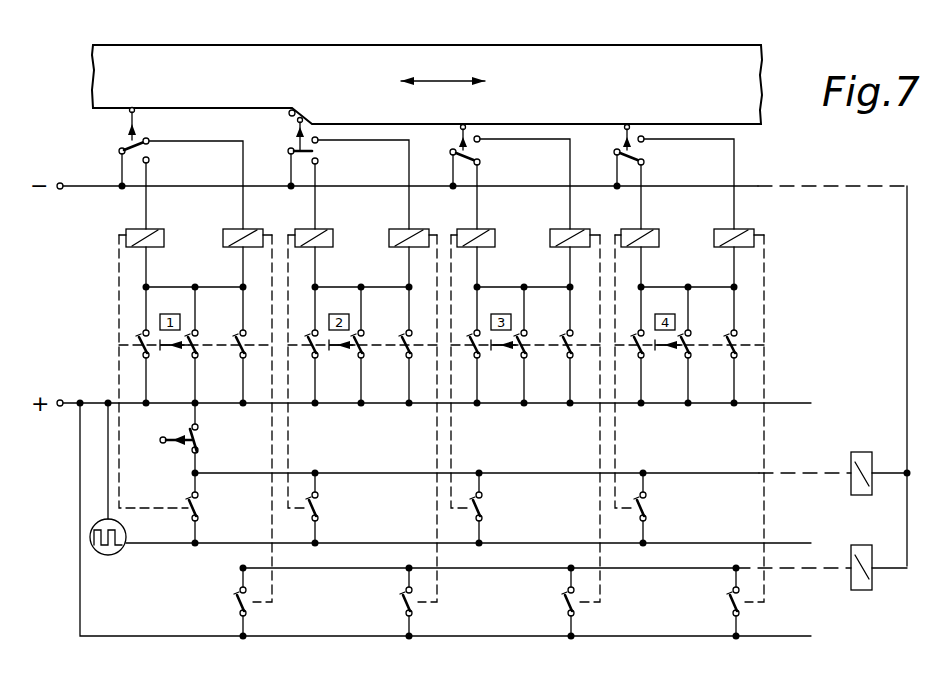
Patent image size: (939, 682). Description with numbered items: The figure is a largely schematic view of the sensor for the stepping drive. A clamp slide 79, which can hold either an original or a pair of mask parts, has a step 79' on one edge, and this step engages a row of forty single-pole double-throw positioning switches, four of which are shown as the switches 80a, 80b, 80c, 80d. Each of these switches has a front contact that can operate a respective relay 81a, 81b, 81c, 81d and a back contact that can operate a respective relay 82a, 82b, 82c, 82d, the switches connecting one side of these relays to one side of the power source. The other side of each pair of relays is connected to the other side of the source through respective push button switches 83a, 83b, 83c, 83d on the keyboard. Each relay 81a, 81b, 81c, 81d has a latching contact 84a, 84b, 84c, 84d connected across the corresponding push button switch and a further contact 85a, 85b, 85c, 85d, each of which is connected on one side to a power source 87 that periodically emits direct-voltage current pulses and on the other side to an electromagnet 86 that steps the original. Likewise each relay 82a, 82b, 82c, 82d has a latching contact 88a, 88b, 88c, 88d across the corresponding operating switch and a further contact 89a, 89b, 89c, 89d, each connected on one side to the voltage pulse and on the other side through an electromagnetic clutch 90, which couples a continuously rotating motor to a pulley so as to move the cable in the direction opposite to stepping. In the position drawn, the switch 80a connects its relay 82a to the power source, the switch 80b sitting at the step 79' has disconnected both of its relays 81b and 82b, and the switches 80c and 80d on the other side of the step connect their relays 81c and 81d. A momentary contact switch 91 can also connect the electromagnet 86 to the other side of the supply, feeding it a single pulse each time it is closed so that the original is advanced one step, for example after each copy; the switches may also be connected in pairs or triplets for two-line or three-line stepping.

The clamp slide 79 is at (427, 66).
The step 79' is at (318, 97).
The SPDT positioning switch 80a is at (127, 138).
The SPDT positioning switch 80b is at (289, 146).
The SPDT positioning switch 80c is at (482, 160).
The SPDT positioning switch 80d is at (646, 160).
The relay 81a is at (124, 236).
The relay 81b is at (298, 231).
The relay 81c is at (460, 231).
The relay 81d is at (623, 231).
The relay 82a is at (226, 231).
The relay 82b is at (392, 231).
The relay 82c is at (554, 231).
The relay 82d is at (717, 231).
The push button switch 83a is at (196, 340).
The push button switch 83b is at (362, 340).
The push button switch 83c is at (525, 340).
The push button switch 83d is at (689, 340).
The latching contact 84a is at (149, 350).
The latching contact 84b is at (318, 350).
The latching contact 84c is at (480, 350).
The latching contact 84d is at (644, 350).
The further contact 85a is at (199, 504).
The further contact 85b is at (319, 504).
The further contact 85c is at (483, 504).
The further contact 85d is at (647, 504).
The electromagnet 86 is at (864, 455).
The power source 87 is at (113, 550).
The latching contact 88a is at (238, 350).
The latching contact 88b is at (403, 350).
The latching contact 88c is at (565, 350).
The latching contact 88d is at (729, 350).
The further contact 89a is at (238, 597).
The further contact 89b is at (404, 597).
The further contact 89c is at (566, 597).
The further contact 89d is at (731, 597).
The electromagnetic clutch 90 is at (866, 577).
The momentary contact switch 91 is at (199, 432).